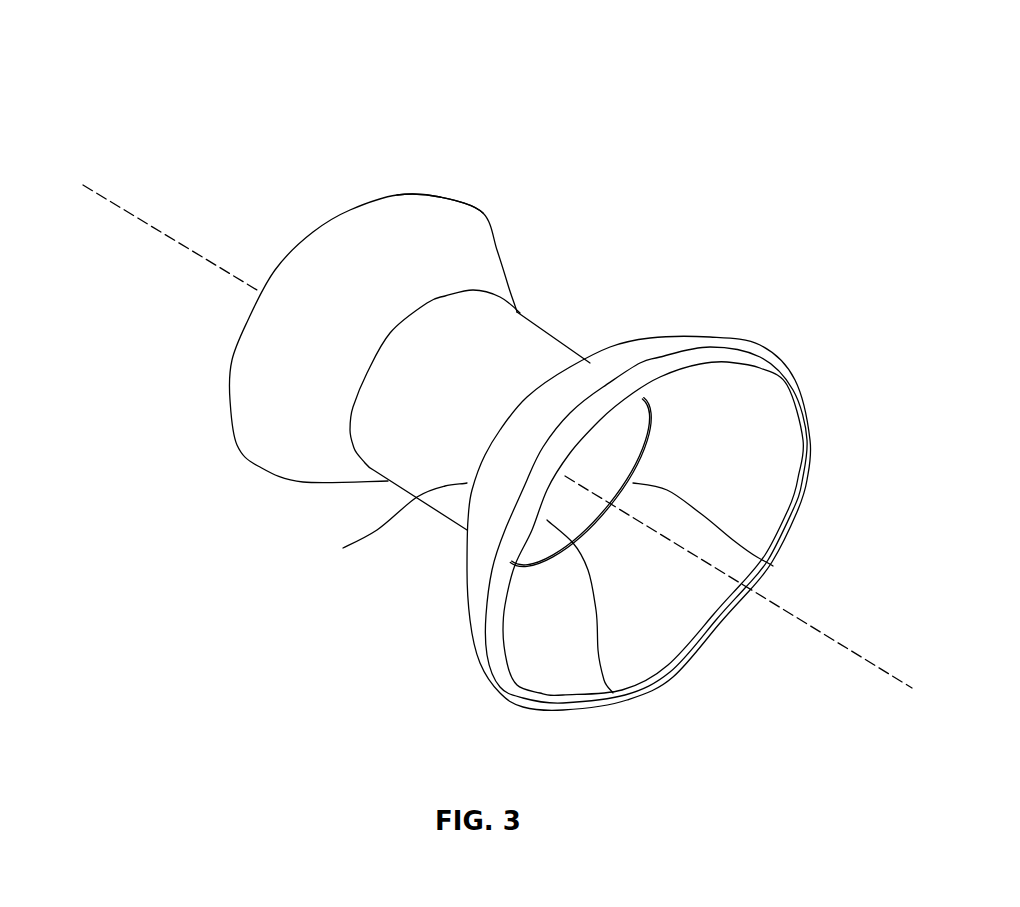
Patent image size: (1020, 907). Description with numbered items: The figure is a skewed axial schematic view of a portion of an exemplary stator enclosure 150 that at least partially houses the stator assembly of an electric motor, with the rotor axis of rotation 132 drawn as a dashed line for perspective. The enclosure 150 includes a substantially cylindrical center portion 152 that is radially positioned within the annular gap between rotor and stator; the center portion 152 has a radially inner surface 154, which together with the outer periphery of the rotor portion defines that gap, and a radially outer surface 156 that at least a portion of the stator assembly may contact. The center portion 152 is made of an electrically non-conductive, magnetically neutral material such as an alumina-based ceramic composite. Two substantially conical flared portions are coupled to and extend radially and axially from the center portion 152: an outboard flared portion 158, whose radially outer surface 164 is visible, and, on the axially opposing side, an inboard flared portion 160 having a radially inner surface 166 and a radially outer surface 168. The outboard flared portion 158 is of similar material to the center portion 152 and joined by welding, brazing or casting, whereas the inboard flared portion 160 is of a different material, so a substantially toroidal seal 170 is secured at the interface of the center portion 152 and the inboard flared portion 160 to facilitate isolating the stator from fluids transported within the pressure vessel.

The stator enclosure 150 is at (172, 44).
The axis of rotation 132 is at (140, 218).
The center portion 152 is at (573, 297).
The radially inner surface 154 is at (613, 693).
The radially outer surface 156 is at (568, 387).
The outboard flared portion 158 is at (317, 155).
The inboard flared portion 160 is at (815, 320).
The radially outer surface 164 is at (422, 220).
The radially inner surface 166 is at (778, 512).
The radially outer surface 168 is at (588, 362).
The toroidal seal 170 is at (772, 564).